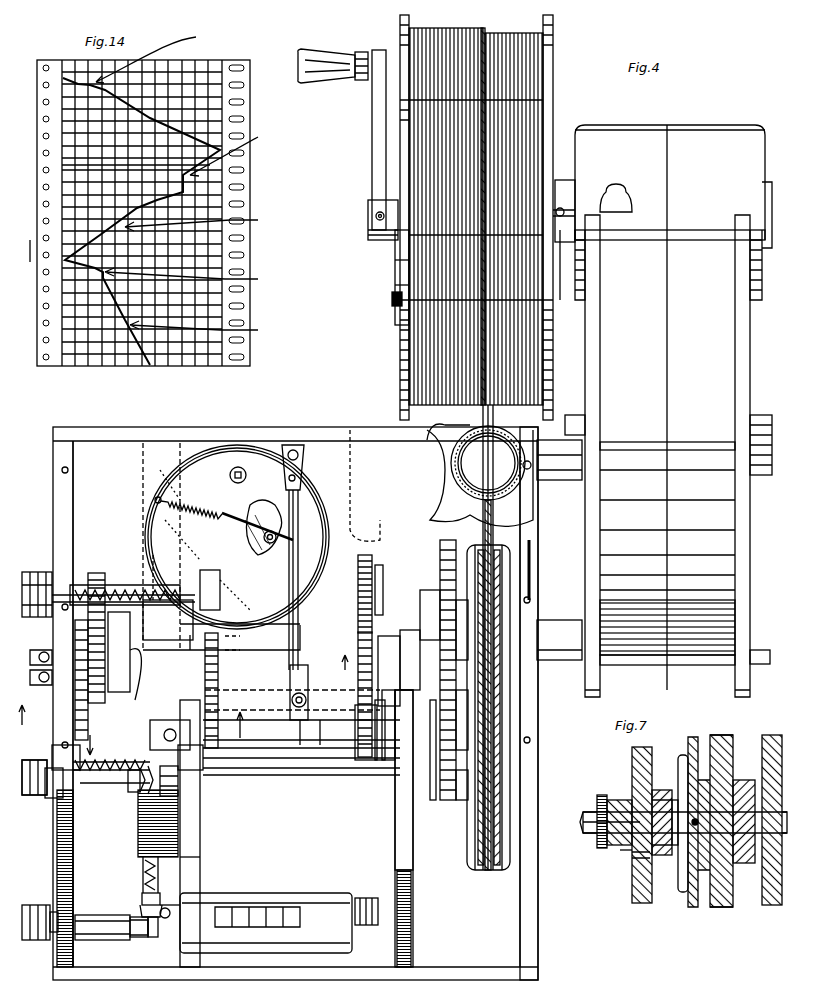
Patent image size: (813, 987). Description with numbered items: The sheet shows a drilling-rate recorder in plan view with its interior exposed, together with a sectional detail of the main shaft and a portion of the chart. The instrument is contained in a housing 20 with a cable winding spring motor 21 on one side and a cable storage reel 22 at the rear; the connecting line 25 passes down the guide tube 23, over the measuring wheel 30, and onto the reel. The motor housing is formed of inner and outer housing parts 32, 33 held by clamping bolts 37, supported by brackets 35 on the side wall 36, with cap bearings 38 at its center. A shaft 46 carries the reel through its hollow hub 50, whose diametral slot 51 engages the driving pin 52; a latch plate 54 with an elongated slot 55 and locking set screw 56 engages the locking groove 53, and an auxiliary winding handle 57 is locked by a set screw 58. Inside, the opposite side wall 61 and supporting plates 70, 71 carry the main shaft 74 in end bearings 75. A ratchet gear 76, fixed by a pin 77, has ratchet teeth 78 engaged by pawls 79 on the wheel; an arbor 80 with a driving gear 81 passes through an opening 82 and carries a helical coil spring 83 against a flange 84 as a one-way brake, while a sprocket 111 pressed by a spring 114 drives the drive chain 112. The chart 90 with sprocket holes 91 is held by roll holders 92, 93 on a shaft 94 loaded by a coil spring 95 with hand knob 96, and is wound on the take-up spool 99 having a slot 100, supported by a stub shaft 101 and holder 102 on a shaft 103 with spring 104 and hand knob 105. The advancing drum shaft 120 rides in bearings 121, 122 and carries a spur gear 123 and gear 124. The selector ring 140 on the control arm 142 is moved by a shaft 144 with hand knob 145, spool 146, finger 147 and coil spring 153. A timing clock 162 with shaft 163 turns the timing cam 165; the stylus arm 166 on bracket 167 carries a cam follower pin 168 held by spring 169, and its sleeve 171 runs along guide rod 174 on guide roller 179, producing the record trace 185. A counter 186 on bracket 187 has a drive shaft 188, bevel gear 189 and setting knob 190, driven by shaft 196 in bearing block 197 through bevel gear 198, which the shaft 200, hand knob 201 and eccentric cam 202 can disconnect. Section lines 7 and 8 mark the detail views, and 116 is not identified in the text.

In FIG. 4, the section line 7— 7 is at (558, 668).
In FIG. 4, the section line 8— 8 is at (127, 730).
In FIG. 4, the housing 20 is at (86, 456).
In FIG. 4, the cable winding spring motor 21 is at (757, 113).
In FIG. 4, the cable storage reel 22 is at (552, 52).
In FIG. 4, the guide tube 23 is at (460, 450).
In FIG. 4, the connecting line 25 is at (475, 410).
In FIG. 4, the measuring wheel 30 is at (500, 598).
In FIG. 7, the measuring wheel 30 is at (750, 770).
In FIG. 4, the inner housing part 32 is at (630, 130).
In FIG. 4, the outer housing part 33 is at (695, 135).
In FIG. 4, the brackets 35 is at (565, 478).
In FIG. 4, the side wall 36 is at (530, 570).
In FIG. 7, the side wall 36 is at (780, 755).
In FIG. 4, the clamping bolts 37 is at (685, 440).
In FIG. 4, the cap bearings 38 is at (575, 415).
In FIG. 4, the shaft 46 is at (384, 205).
In FIG. 4, the hollow hub 50 is at (560, 200).
In FIG. 4, the diametral slot 51 is at (562, 290).
In FIG. 4, the driving pin 52 is at (565, 208).
In FIG. 4, the locking groove 53 is at (397, 250).
In FIG. 4, the latch plate 54 is at (397, 262).
In FIG. 4, the elongated slot 55 is at (397, 290).
In FIG. 4, the locking set screw 56 is at (395, 308).
In FIG. 4, the auxiliary winding handle 57 is at (340, 82).
In FIG. 4, the set screw 58 is at (376, 217).
In FIG. 4, the side wall 61 is at (60, 499).
In FIG. 4, the supporting plate 70 is at (405, 860).
In FIG. 7, the supporting plate 70 is at (640, 890).
In FIG. 4, the supporting plate 71 is at (178, 840).
In FIG. 7, the main shaft 74 is at (785, 835).
In FIG. 7, the end bearings 75 is at (755, 795).
In FIG. 4, the ratchet gear 76 is at (470, 763).
In FIG. 7, the ratchet gear 76 is at (700, 880).
In FIG. 7, the pin 77 is at (717, 880).
In FIG. 4, the ratchet teeth 78 is at (450, 580).
In FIG. 4, the pawls 79 is at (460, 610).
In FIG. 4, the arbor 80 is at (390, 650).
In FIG. 7, the arbor 80 is at (612, 800).
In FIG. 4, the driving gear 81 is at (358, 640).
In FIG. 7, the driving gear 81 is at (600, 848).
In FIG. 7, the opening 82 is at (625, 850).
In FIG. 7, the helical coil spring 83 is at (660, 795).
In FIG. 7, the flange 84 is at (640, 860).
In FIG. 14, the chart 90 is at (44, 90).
In FIG. 4, the chart 90 is at (345, 565).
In FIG. 14, the sprocket holes 91 is at (28, 264).
In FIG. 4, the roll holder 92 is at (365, 485).
In FIG. 4, the roll holder 93 is at (190, 575).
In FIG. 4, the shaft 94 is at (85, 565).
In FIG. 4, the coil spring 95 is at (122, 590).
In FIG. 4, the hand knob 96 is at (37, 575).
In FIG. 4, the take-up spool 99 is at (305, 780).
In FIG. 4, the slot 100 is at (272, 780).
In FIG. 4, the stub shaft 101 is at (392, 760).
In FIG. 4, the holder 102 is at (195, 775).
In FIG. 4, the shaft 103 is at (113, 780).
In FIG. 4, the spring 104 is at (52, 798).
In FIG. 4, the hand knob 105 is at (55, 755).
In FIG. 4, the sprocket 111 is at (435, 722).
In FIG. 7, the sprocket 111 is at (676, 848).
In FIG. 4, the drive chain 112 is at (434, 622).
In FIG. 4, the spring 114 is at (432, 705).
In FIG. 7, the spring 114 is at (680, 880).
In FIG. 4, the gear 116 is at (457, 790).
In FIG. 4, the shaft 120 is at (140, 690).
In FIG. 4, the bearing 121 is at (383, 745).
In FIG. 4, the bearing 122 is at (75, 705).
In FIG. 4, the spur gear 123 is at (218, 640).
In FIG. 4, the gear 124 is at (75, 680).
In FIG. 4, the ring 140 is at (132, 690).
In FIG. 4, the control arm 142 is at (138, 660).
In FIG. 4, the shaft 144 is at (95, 790).
In FIG. 4, the hand knob 145 is at (30, 800).
In FIG. 4, the spool 146 is at (132, 795).
In FIG. 4, the finger 147 is at (145, 795).
In FIG. 4, the coil spring 153 is at (178, 790).
In FIG. 4, the timing clock 162 is at (210, 460).
In FIG. 4, the shaft 163 is at (270, 528).
In FIG. 4, the timing cam 165 is at (248, 526).
In FIG. 4, the stylus arm 166 is at (301, 620).
In FIG. 4, the bracket 167 is at (302, 460).
In FIG. 4, the cam follower pin 168 is at (300, 535).
In FIG. 4, the spring 169 is at (190, 502).
In FIG. 4, the sleeve 171 is at (290, 686).
In FIG. 4, the guide rod 174 is at (322, 712).
In FIG. 4, the guide roller 179 is at (291, 700).
In FIG. 14, the record trace 185 is at (60, 166).
In FIG. 4, the counter 186 is at (258, 895).
In FIG. 4, the bracket 187 is at (345, 930).
In FIG. 4, the drive shaft 188 is at (175, 915).
In FIG. 4, the bevel gear 189 is at (160, 935).
In FIG. 4, the setting knob 190 is at (380, 911).
In FIG. 4, the shaft 196 is at (143, 885).
In FIG. 4, the bearing block 197 is at (200, 848).
In FIG. 4, the bevel gear 198 is at (160, 900).
In FIG. 4, the shaft 200 is at (92, 925).
In FIG. 4, the hand knob 201 is at (32, 910).
In FIG. 4, the eccentric cam 202 is at (140, 940).